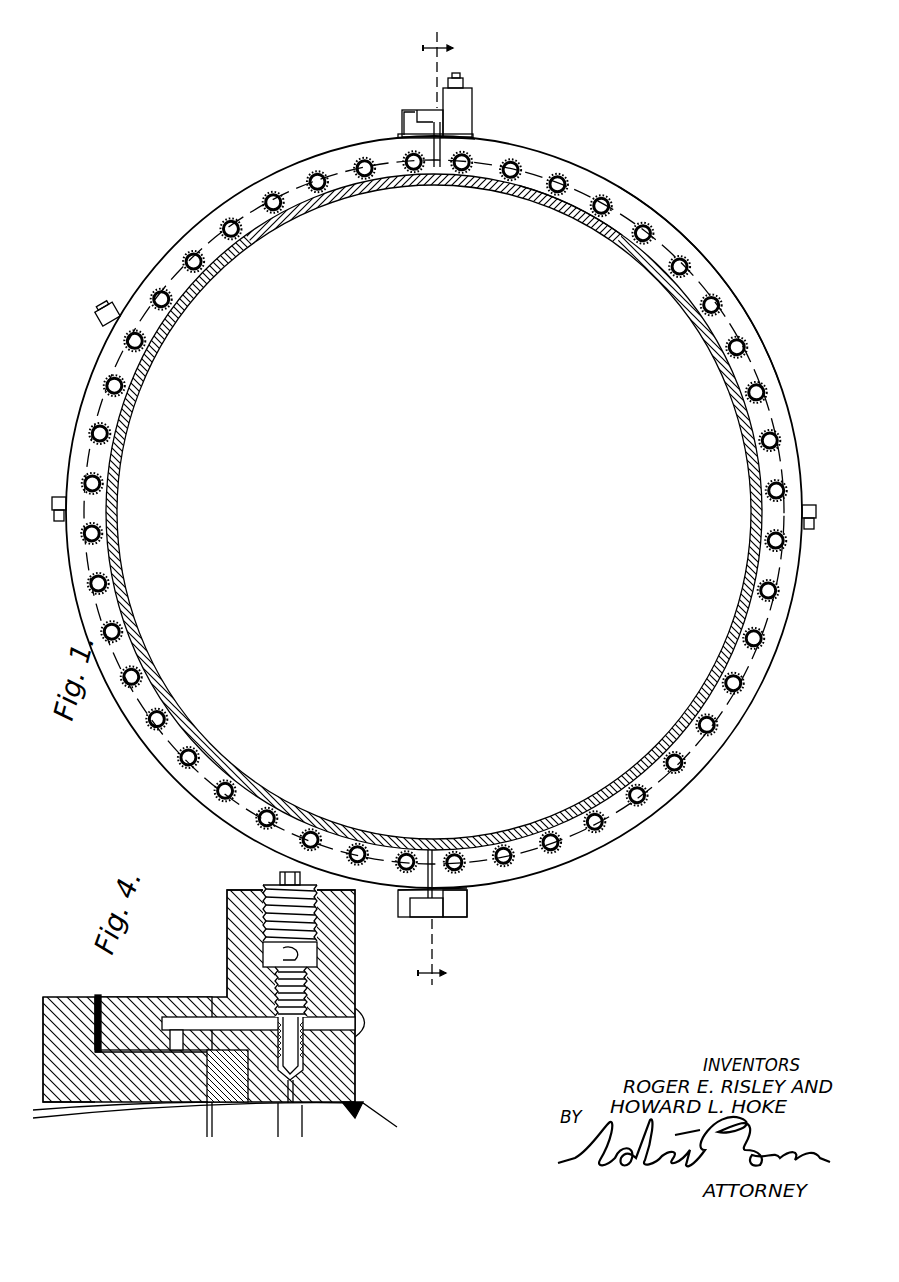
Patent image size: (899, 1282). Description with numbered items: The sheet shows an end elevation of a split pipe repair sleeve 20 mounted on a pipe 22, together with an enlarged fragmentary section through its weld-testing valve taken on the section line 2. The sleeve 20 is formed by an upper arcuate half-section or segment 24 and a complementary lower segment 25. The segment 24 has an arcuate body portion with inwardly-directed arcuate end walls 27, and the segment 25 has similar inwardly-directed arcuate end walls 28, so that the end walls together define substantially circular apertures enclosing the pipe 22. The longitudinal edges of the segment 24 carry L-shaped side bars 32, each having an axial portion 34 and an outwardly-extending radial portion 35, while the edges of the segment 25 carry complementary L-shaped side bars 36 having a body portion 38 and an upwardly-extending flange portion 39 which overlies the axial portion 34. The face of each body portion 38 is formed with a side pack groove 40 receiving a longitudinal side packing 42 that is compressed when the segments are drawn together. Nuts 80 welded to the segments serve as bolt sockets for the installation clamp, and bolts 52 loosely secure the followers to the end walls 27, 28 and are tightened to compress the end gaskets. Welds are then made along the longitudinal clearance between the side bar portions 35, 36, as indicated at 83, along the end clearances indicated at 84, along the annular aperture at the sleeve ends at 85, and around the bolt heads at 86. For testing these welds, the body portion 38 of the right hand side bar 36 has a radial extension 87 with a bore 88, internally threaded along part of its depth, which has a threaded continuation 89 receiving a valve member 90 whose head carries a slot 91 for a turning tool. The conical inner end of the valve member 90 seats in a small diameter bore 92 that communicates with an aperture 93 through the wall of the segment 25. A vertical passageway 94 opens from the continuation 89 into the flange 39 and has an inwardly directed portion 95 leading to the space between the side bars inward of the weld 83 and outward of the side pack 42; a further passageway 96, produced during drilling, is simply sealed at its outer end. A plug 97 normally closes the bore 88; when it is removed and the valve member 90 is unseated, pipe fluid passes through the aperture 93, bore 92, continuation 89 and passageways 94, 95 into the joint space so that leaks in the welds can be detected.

In FIG. 1, the section line 2- 2 is at (435, 506).
In FIG. 1, the split repair sleeve 20 is at (192, 225).
In FIG. 1, the pipe 22 is at (128, 660).
In FIG. 1, the upper arcuate half-section or segment 24 is at (157, 273).
In FIG. 1, the lower half-section or segment 25 is at (655, 245).
In FIG. 1, the arcuate end walls 27 is at (293, 188).
In FIG. 1, the arcuate end walls 28 is at (580, 197).
In FIG. 1, the L-shaped side flanges or side bars 32 is at (422, 132).
In FIG. 1, the axial portion 34 is at (423, 132).
In FIG. 4, the axial portion 34 is at (145, 1097).
In FIG. 1, the outwardly-extending radial portion 35 is at (408, 110).
In FIG. 4, the outwardly-extending radial portion 35 is at (63, 1003).
In FIG. 1, the L-shaped side bars 36 is at (465, 133).
In FIG. 1, the body portion 38 is at (470, 115).
In FIG. 4, the body portion 38 is at (347, 1070).
In FIG. 1, the upwardly-extending flange portion 39 is at (430, 113).
In FIG. 4, the upwardly-extending flange portion 39 is at (167, 1007).
In FIG. 1, the side pack recess or groove 40 is at (458, 905).
In FIG. 1, the longitudinal side packing 42 is at (443, 905).
In FIG. 4, the longitudinal side packing 42 is at (230, 1083).
In FIG. 1, the bolts 52 is at (93, 428).
In FIG. 1, the nuts 80 is at (52, 488).
In FIG. 4, the weld 83 is at (100, 1002).
In FIG. 1, the end clearances 84 is at (457, 143).
In FIG. 1, the welds 85 is at (160, 733).
In FIG. 1, the bolt head welds 86 is at (263, 200).
In FIG. 4, the radial extension 87 is at (233, 942).
In FIG. 4, the bore 88 is at (307, 958).
In FIG. 4, the threaded continuation 89 is at (310, 1002).
In FIG. 4, the valve member 90 is at (277, 997).
In FIG. 4, the slot 91 is at (303, 953).
In FIG. 4, the small diameter bore 92 is at (358, 1100).
In FIG. 4, the aperture 93 is at (297, 1130).
In FIG. 4, the vertical passageway 94 is at (180, 1023).
In FIG. 4, the inwardly directed portion 95 is at (155, 1008).
In FIG. 4, the passageway 96 is at (366, 1030).
In FIG. 1, the plug 97 is at (460, 77).
In FIG. 4, the plug 97 is at (263, 920).